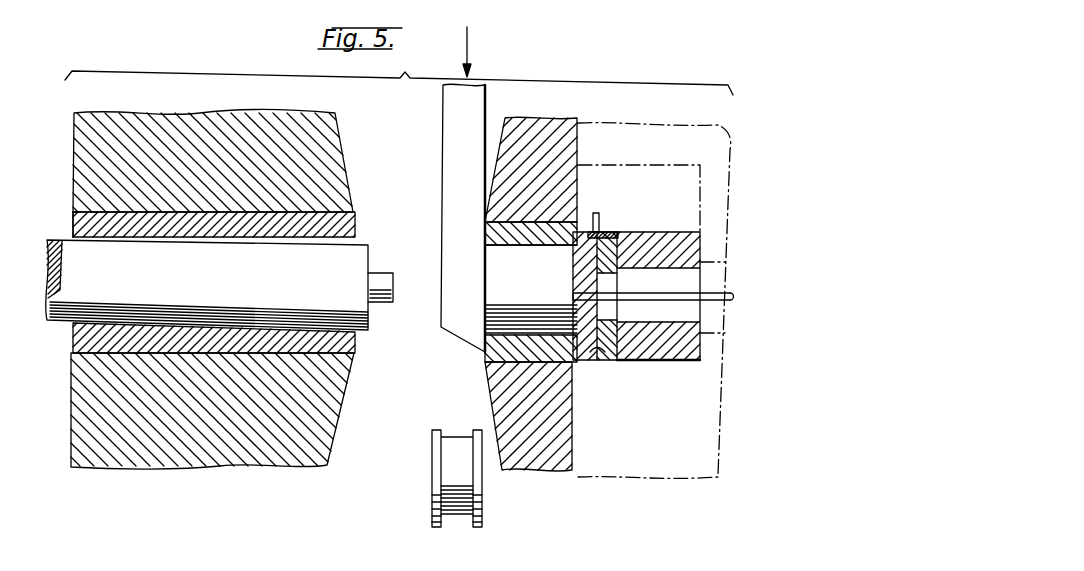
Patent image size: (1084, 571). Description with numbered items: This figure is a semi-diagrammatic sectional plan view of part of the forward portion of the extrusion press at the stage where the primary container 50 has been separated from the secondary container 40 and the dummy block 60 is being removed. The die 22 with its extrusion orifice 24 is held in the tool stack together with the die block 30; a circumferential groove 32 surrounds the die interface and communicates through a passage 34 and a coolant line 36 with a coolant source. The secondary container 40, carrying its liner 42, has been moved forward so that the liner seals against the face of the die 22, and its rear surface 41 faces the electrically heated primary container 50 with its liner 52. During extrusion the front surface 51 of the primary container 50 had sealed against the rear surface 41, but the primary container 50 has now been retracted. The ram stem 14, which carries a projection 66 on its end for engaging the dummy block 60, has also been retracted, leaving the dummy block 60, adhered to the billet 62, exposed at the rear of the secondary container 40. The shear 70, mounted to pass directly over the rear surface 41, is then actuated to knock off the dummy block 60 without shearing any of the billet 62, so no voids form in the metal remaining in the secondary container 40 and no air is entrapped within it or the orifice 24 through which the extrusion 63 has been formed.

The ram stem 14 is at (233, 288).
The die 22 is at (582, 263).
The extrusion orifice 24 is at (573, 294).
The die block 30 is at (646, 350).
The circumferential groove 32 is at (598, 362).
The passage 34 is at (603, 233).
The coolant line 36 is at (601, 217).
The secondary container 40 is at (567, 186).
The rear surface of secondary container 41 is at (480, 236).
The secondary container liner 42 is at (552, 230).
The primary container 50 is at (332, 165).
The front surface of primary container 51 is at (357, 230).
The primary container liner 52 is at (77, 222).
The dummy block 60 is at (440, 468).
The billet 62 is at (501, 286).
The extrusion 63 is at (733, 297).
The projection 66 is at (385, 276).
The shear 70 is at (456, 160).